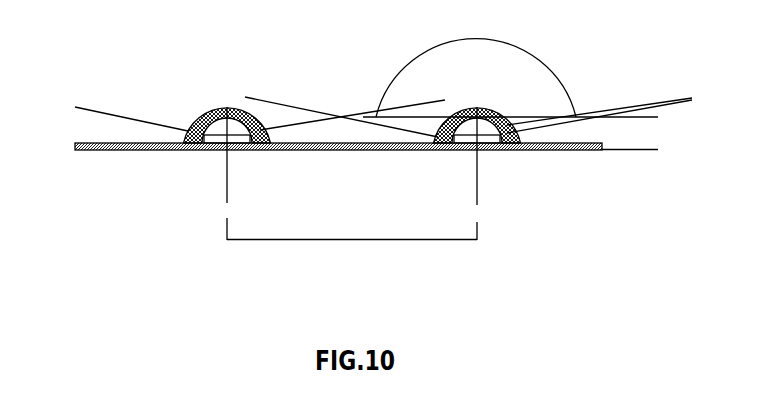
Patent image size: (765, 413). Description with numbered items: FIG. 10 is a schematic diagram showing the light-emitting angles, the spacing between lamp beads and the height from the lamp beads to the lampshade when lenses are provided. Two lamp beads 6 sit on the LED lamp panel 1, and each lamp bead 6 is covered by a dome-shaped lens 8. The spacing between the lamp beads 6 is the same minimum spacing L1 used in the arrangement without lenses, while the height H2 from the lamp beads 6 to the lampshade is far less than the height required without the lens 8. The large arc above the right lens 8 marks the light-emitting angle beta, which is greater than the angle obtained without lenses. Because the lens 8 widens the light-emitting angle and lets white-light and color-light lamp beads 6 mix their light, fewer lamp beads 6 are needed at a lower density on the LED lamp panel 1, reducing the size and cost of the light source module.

The LED lamp panel 1 is at (162, 148).
The lamp bead 6 is at (212, 144).
The lens 8 is at (203, 116).
The spacing between the lamp beads L1 is at (352, 175).
The height from the lamp beads to the lampshade H2 is at (680, 131).